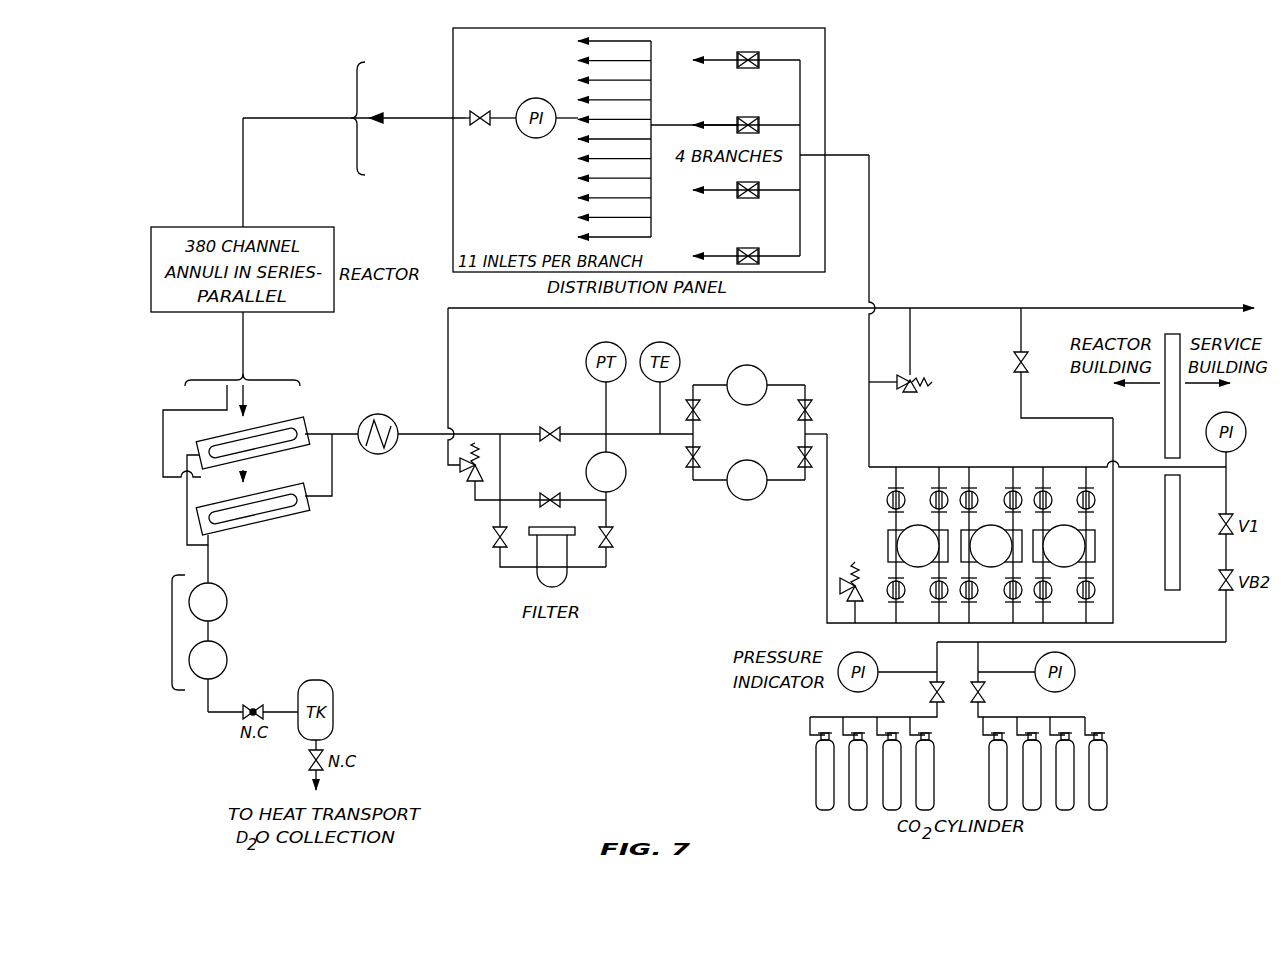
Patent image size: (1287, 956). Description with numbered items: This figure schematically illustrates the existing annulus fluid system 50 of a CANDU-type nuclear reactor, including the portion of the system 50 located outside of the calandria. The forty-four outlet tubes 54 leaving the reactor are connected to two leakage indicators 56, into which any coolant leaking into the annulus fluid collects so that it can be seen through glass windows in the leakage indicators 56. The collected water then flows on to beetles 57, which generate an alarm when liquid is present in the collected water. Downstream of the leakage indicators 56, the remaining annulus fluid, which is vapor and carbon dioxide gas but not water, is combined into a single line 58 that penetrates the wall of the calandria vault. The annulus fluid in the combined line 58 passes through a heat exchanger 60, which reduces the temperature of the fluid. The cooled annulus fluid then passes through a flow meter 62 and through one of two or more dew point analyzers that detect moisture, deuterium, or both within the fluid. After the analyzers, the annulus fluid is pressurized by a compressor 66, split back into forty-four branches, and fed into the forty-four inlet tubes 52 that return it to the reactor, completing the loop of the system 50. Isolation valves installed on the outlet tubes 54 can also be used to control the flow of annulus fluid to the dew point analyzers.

The annulus fluid system 50 is at (1080, 125).
The inlet tubes 52 is at (228, 186).
The outlet tubes 54 is at (222, 328).
The leakage indicators 56 is at (248, 530).
The beetles 57 is at (172, 632).
The single line 58 is at (348, 432).
The heat exchanger 60 is at (392, 418).
The flow meter 62 is at (612, 490).
The compressor 66 is at (772, 573).